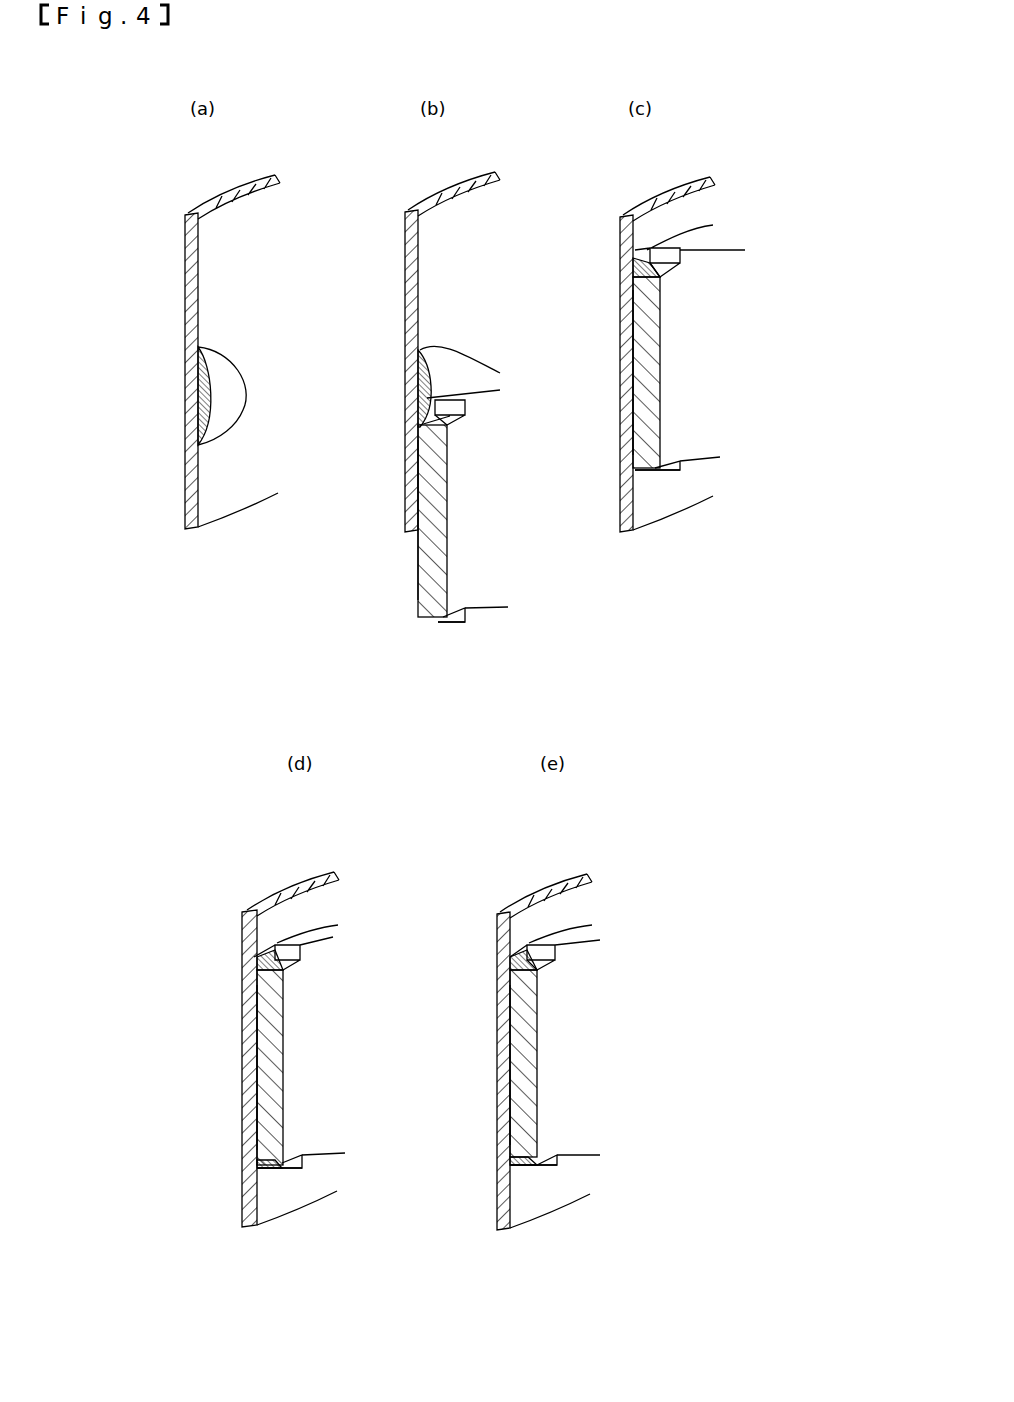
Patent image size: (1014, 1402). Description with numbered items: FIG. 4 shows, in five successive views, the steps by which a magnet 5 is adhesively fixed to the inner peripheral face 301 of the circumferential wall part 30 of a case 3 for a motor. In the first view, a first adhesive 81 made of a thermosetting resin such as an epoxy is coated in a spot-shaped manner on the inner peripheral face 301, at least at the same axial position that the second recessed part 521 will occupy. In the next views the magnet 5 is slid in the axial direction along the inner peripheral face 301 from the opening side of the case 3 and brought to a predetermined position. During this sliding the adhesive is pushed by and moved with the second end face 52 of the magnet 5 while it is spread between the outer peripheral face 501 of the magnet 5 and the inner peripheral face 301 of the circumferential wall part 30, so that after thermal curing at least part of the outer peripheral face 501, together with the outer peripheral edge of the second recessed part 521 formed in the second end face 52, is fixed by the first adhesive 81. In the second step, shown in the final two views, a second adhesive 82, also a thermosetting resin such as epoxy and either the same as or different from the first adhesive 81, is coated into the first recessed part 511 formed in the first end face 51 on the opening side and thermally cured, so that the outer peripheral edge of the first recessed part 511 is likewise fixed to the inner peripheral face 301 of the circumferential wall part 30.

The case 3 is at (399, 720).
The circumferential wall part 30 is at (185, 247).
The inner peripheral face 301 is at (279, 240).
The first adhesive 81 is at (200, 395).
The second adhesive 82 is at (243, 1163).
The magnet 5 is at (447, 543).
The outer peripheral face 501 is at (418, 566).
The first end face 51 is at (487, 615).
The first recessed part 511 is at (453, 627).
The second end face 52 is at (488, 392).
The second recessed part 521 is at (447, 423).